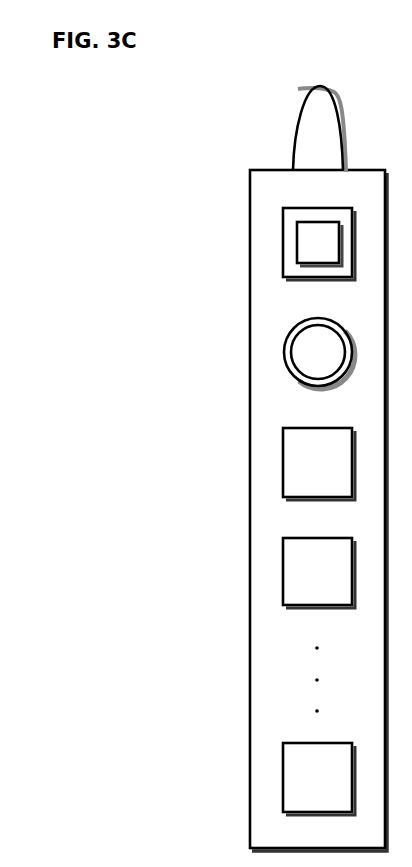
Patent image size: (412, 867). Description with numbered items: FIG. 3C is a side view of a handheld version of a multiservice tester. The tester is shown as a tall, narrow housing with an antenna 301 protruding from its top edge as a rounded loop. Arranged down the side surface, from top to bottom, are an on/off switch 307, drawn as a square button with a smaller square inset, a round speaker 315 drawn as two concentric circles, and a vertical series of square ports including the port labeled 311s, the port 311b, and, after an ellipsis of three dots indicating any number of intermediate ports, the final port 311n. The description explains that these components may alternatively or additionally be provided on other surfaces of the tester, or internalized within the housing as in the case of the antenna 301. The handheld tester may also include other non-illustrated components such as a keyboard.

The antenna 301 is at (312, 109).
The on/off switch 307 is at (288, 251).
The speaker 315 is at (288, 355).
The button 311s is at (288, 482).
The port 311b is at (288, 585).
The port 311n is at (288, 778).